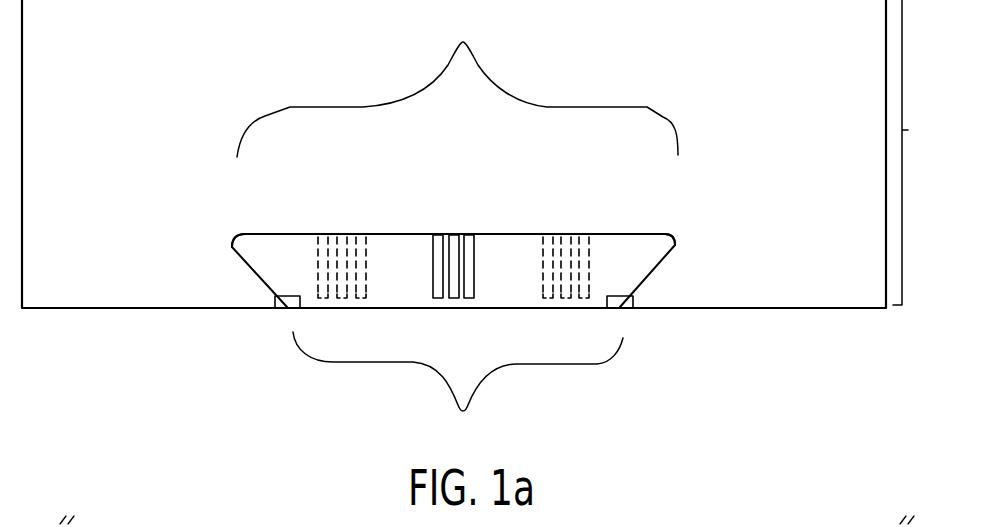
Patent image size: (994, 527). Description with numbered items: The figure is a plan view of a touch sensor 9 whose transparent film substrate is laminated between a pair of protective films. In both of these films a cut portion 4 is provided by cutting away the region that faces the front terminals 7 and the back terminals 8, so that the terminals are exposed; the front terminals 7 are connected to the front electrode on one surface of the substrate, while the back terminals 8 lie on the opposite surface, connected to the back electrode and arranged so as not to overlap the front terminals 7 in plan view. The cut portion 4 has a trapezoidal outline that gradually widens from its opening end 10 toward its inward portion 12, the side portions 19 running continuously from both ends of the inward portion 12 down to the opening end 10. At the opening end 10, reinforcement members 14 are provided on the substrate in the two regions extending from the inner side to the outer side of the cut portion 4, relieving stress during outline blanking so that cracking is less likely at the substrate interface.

The cut portion 4 is at (457, 83).
The front terminals 7 is at (476, 238).
The back terminals 8 is at (360, 241).
The touch sensor 9 is at (910, 152).
The opening end 10 is at (458, 389).
The inward portion 12 is at (397, 233).
The reinforcement members 14 is at (622, 308).
The side portions 19 is at (252, 272).